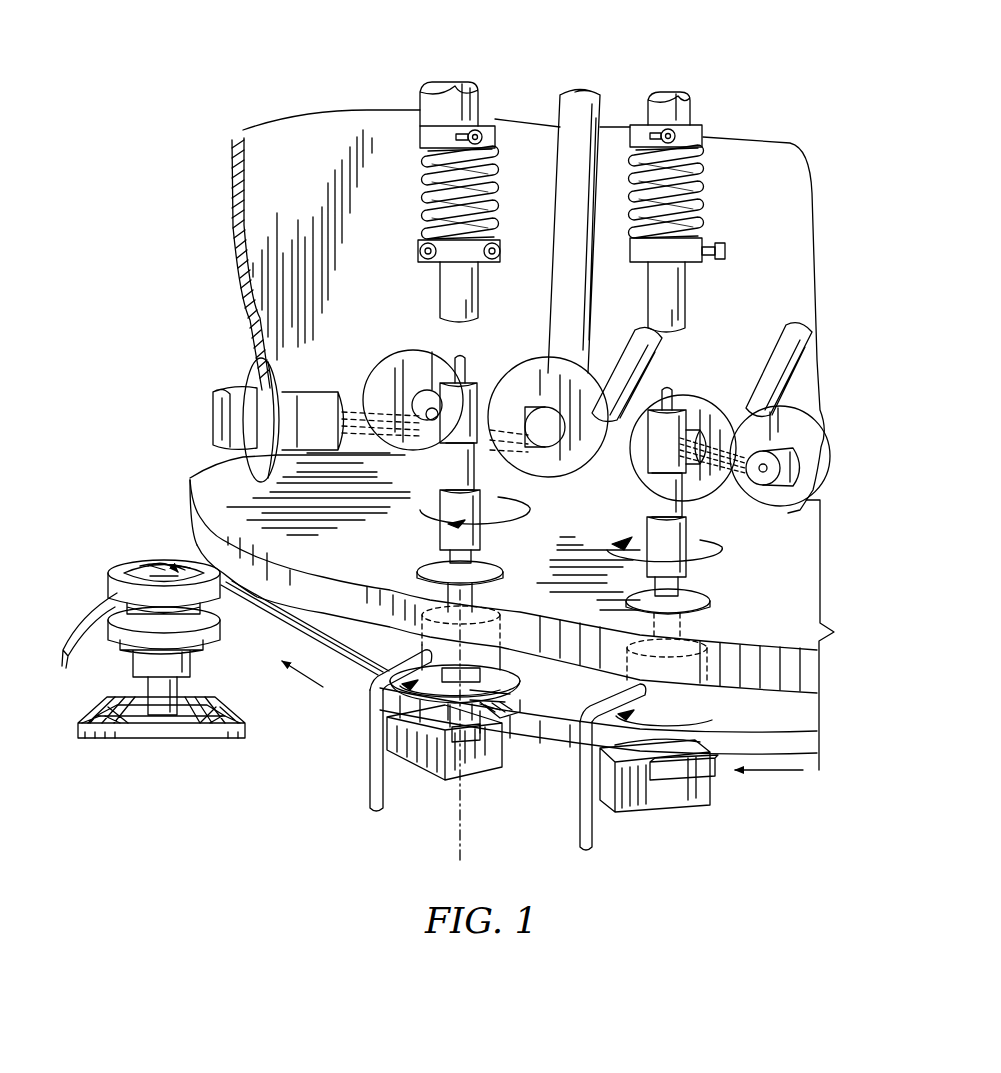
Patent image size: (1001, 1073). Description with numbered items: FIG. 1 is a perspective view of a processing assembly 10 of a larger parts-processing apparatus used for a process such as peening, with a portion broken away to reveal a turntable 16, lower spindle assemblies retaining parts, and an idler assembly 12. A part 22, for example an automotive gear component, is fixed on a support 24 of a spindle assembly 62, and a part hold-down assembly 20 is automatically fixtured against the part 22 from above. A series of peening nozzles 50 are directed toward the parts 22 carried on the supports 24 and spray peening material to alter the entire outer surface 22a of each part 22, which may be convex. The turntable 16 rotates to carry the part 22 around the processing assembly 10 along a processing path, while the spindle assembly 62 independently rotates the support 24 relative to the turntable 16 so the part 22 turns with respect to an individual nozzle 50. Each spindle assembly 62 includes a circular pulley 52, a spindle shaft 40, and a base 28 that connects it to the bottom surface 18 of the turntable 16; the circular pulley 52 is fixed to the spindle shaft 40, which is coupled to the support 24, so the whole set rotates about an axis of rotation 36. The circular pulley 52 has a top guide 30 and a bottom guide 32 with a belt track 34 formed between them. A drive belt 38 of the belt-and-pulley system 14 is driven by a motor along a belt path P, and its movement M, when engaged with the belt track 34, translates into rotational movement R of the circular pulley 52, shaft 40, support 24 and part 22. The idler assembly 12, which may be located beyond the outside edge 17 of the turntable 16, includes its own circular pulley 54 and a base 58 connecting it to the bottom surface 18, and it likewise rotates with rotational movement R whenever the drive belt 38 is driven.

The processing assembly 10 is at (337, 85).
The idler assembly 12 is at (141, 600).
The belt-and-pulley system 14 is at (608, 822).
The turntable 16 is at (796, 693).
The outside edge 17 is at (767, 653).
The bottom surface 18 is at (673, 803).
The part hold-down assembly 20 is at (625, 238).
The part 22 is at (652, 458).
The outer surface 22a is at (653, 482).
The support 24 is at (567, 484).
The base 28 is at (420, 720).
The top guide 30 is at (492, 688).
The bottom guide 32 is at (503, 700).
The belt track 34 is at (503, 700).
The axis of rotation 36 is at (462, 820).
The drive belt 38 is at (637, 740).
The spindle shaft 40 is at (473, 688).
The peening nozzle 50 is at (420, 403).
The circular pulley 52 is at (482, 726).
The circular pulley 54 is at (133, 630).
The base 58 is at (222, 700).
The spindle assembly 62 is at (630, 680).
The rotational movement R is at (152, 565).
The belt path P is at (323, 687).
The movement M is at (780, 772).